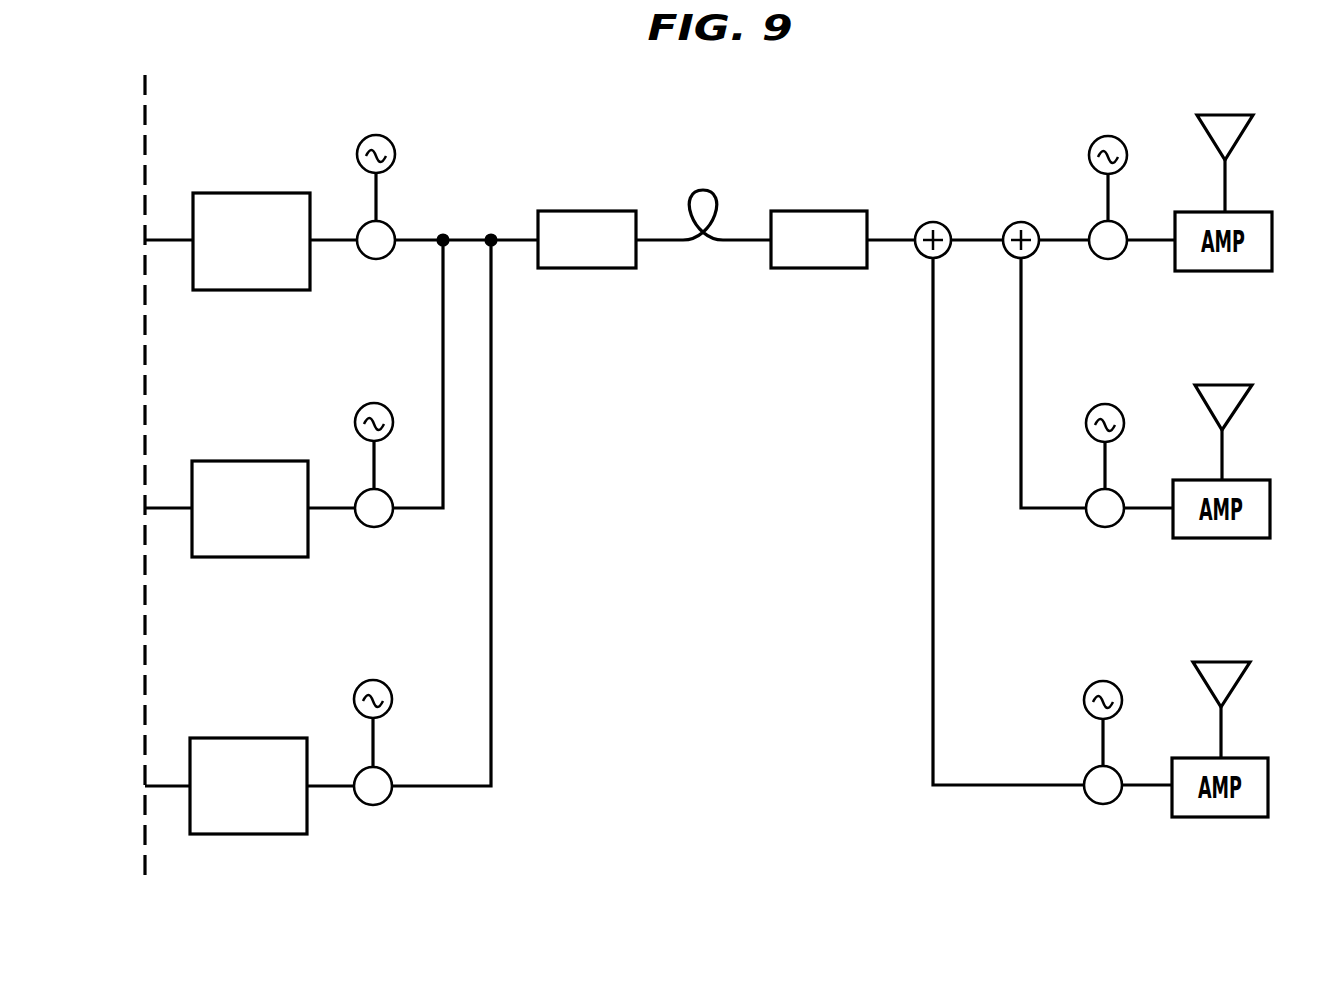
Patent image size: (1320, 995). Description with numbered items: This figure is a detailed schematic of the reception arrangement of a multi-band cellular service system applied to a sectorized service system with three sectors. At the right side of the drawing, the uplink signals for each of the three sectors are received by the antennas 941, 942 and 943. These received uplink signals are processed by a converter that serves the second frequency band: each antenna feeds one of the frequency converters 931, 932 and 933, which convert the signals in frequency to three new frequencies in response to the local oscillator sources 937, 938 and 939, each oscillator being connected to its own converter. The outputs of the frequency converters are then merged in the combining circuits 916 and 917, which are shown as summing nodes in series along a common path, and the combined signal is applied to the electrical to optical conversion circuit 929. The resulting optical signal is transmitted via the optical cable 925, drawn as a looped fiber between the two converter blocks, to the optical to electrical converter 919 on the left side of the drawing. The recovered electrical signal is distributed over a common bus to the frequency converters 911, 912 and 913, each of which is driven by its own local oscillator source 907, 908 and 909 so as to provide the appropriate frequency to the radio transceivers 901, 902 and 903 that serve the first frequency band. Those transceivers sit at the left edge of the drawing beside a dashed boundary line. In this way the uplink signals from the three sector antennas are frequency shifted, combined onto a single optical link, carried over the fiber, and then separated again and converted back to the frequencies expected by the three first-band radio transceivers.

The radio transceiver 901 is at (246, 193).
The radio transceiver 902 is at (245, 461).
The radio transceiver 903 is at (243, 738).
The local oscillator source 907 is at (376, 134).
The local oscillator source 908 is at (374, 402).
The local oscillator source 909 is at (373, 679).
The frequency converter 911 is at (376, 260).
The frequency converter 912 is at (374, 528).
The frequency converter 913 is at (373, 806).
The optical to electrical converter 919 is at (566, 211).
The optical cable 925 is at (703, 190).
The electrical to optical conversion circuit 929 is at (800, 211).
The combining circuit 917 is at (933, 222).
The combining circuit 916 is at (1021, 222).
The frequency converter 931 is at (1108, 260).
The frequency converter 932 is at (1105, 528).
The frequency converter 933 is at (1103, 805).
The local oscillator source 937 is at (1108, 135).
The local oscillator source 938 is at (1105, 403).
The local oscillator source 939 is at (1103, 680).
The antenna 941 is at (1221, 662).
The antenna 942 is at (1222, 385).
The antenna 943 is at (1225, 115).